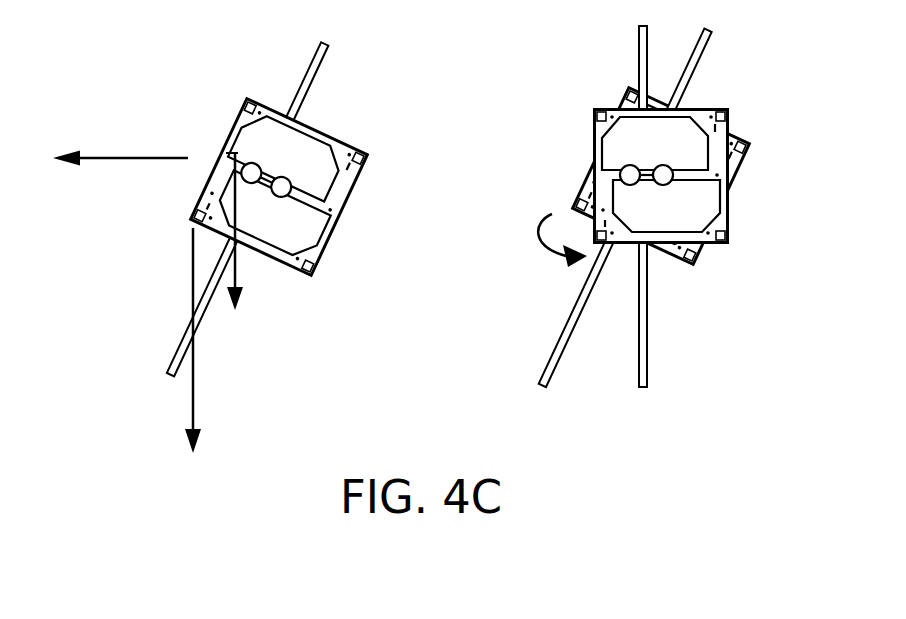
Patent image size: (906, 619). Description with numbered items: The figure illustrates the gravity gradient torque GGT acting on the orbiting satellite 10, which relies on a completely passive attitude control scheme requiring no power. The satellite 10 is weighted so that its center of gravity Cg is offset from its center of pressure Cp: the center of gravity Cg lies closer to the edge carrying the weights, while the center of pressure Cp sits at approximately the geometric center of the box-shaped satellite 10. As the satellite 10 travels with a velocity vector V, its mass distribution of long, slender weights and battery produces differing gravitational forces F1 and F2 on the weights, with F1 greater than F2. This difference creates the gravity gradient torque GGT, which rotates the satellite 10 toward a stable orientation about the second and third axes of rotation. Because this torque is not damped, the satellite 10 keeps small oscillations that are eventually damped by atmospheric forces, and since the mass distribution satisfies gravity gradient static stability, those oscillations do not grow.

The satellite 10 is at (342, 142).
The center of gravity Cg is at (439, 159).
The center of pressure Cp is at (473, 168).
The velocity vector V is at (118, 173).
The gravitational force F1 is at (207, 345).
The gravitational force F2 is at (250, 235).
The gravity gradient torque GGT is at (546, 248).